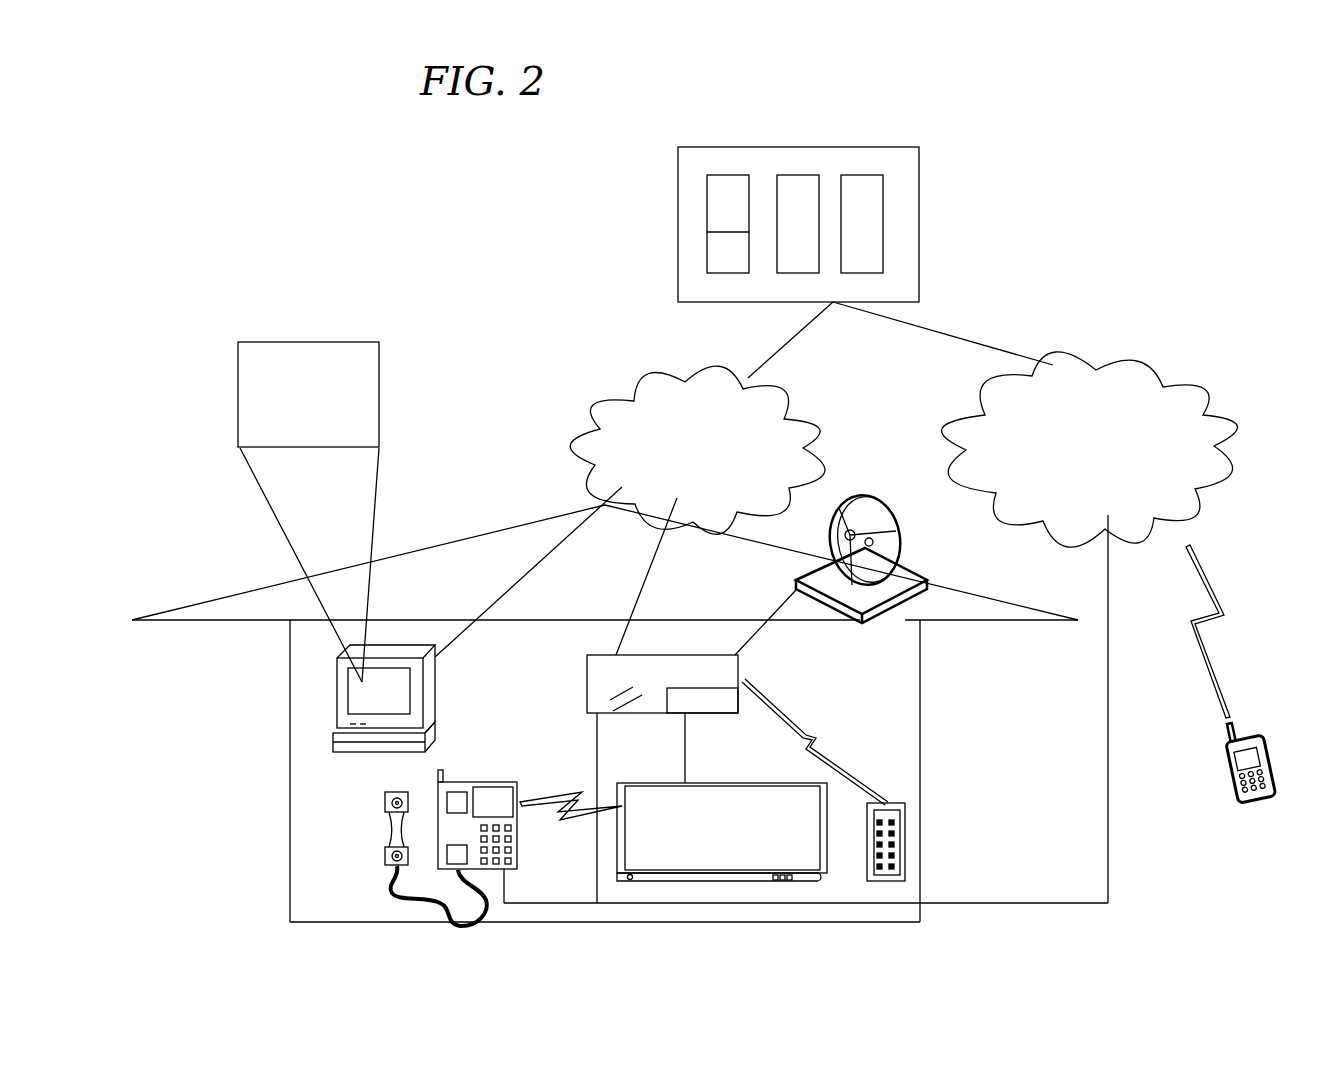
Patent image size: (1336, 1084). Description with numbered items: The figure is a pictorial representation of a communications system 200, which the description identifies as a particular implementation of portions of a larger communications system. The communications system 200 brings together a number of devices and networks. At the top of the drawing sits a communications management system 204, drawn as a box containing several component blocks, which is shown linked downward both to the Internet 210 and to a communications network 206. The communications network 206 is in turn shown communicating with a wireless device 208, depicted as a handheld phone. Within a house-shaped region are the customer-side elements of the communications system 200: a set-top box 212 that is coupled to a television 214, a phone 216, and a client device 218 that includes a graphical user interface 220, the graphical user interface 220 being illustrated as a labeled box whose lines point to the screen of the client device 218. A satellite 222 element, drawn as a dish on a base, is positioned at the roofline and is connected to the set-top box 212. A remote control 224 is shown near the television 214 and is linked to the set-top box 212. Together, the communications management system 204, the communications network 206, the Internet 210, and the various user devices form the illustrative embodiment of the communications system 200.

The communications system 200 is at (406, 201).
The communications management system 204 is at (905, 160).
The communications network 206 is at (1073, 472).
The wireless device 208 is at (1240, 767).
The Internet 210 is at (679, 472).
The set-top box 212 is at (740, 667).
The television 214 is at (805, 803).
The phone 216 is at (393, 832).
The client device 218 is at (342, 720).
The graphical user interface 220 is at (289, 441).
The satellite 222 is at (877, 568).
The remote control 224 is at (892, 832).